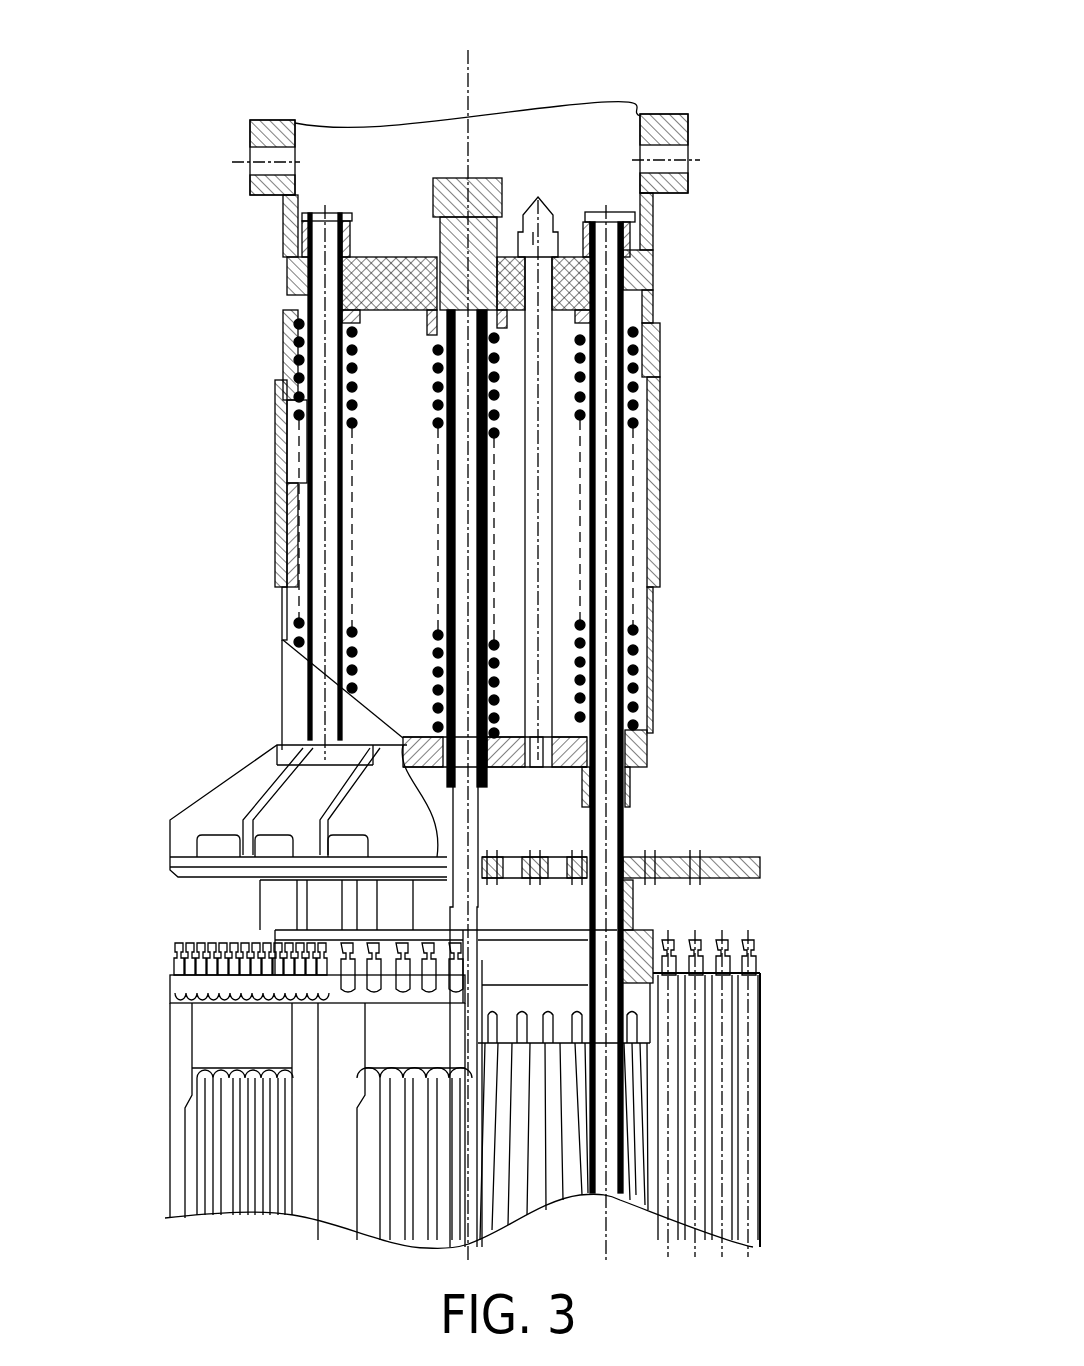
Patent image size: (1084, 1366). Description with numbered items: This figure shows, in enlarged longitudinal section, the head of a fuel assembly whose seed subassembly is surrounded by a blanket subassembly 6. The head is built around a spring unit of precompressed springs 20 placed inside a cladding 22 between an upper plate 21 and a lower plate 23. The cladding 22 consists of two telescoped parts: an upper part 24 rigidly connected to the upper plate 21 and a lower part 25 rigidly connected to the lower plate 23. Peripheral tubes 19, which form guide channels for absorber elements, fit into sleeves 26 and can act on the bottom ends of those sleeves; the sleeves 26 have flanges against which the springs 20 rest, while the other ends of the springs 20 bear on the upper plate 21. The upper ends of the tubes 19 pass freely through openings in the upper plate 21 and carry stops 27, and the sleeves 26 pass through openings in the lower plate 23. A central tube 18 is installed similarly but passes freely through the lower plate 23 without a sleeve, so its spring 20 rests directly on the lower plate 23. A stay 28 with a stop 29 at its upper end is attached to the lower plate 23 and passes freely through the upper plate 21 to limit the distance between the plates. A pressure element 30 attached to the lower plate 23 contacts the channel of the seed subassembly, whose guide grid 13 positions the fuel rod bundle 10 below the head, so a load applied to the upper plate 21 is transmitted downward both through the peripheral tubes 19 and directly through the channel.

The blanket subassembly 6 is at (745, 1142).
The fuel rod bundle 10 is at (630, 1075).
The guide grid 13 is at (558, 1000).
The central tube 18 is at (470, 524).
The peripheral tubes 19 is at (328, 460).
The precompressed springs 20 is at (297, 356).
The upper plate 21 is at (592, 267).
The cladding 22 is at (240, 457).
The lower plate 23 is at (425, 747).
The upper part 24 is at (283, 321).
The lower part 25 is at (283, 618).
The sleeves 26 is at (628, 733).
The stops 27 is at (688, 185).
The stay 28 is at (542, 278).
The stop 29 is at (536, 245).
The pressure element 30 is at (628, 910).